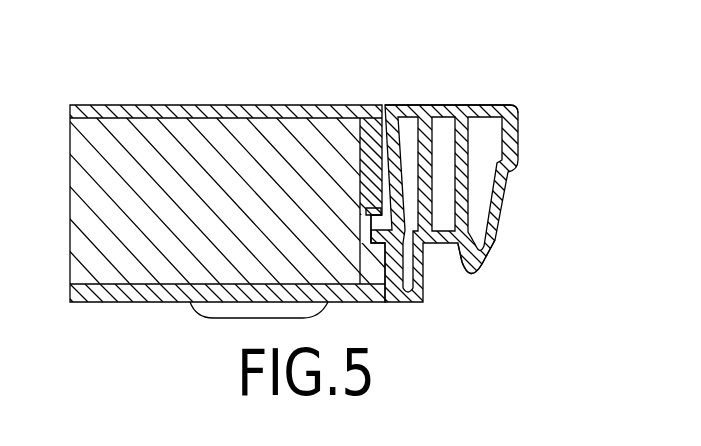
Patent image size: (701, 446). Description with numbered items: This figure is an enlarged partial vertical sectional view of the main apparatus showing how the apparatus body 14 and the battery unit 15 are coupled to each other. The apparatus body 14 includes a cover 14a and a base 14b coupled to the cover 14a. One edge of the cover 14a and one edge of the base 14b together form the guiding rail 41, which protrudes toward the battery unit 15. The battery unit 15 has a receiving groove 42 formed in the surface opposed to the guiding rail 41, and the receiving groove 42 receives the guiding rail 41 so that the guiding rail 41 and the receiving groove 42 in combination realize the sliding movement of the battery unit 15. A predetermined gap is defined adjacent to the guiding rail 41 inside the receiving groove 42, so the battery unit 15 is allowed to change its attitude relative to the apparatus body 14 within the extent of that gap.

The battery unit 15 is at (142, 104).
The apparatus body 14 is at (513, 112).
The cover 14a is at (445, 105).
The base 14b is at (483, 249).
The guiding rail 41 is at (365, 212).
The receiving groove 42 is at (363, 230).